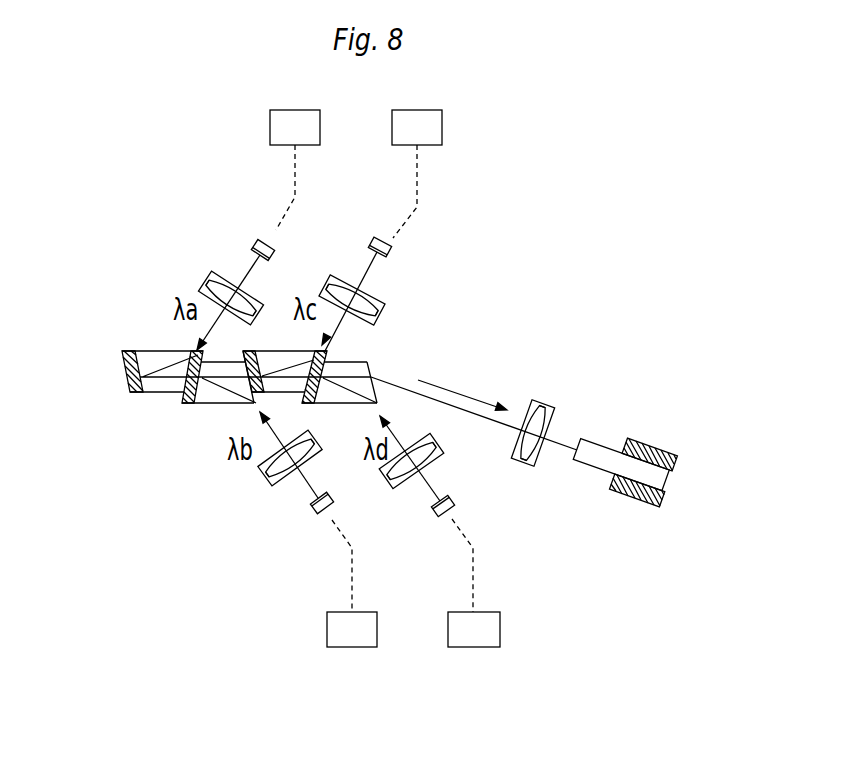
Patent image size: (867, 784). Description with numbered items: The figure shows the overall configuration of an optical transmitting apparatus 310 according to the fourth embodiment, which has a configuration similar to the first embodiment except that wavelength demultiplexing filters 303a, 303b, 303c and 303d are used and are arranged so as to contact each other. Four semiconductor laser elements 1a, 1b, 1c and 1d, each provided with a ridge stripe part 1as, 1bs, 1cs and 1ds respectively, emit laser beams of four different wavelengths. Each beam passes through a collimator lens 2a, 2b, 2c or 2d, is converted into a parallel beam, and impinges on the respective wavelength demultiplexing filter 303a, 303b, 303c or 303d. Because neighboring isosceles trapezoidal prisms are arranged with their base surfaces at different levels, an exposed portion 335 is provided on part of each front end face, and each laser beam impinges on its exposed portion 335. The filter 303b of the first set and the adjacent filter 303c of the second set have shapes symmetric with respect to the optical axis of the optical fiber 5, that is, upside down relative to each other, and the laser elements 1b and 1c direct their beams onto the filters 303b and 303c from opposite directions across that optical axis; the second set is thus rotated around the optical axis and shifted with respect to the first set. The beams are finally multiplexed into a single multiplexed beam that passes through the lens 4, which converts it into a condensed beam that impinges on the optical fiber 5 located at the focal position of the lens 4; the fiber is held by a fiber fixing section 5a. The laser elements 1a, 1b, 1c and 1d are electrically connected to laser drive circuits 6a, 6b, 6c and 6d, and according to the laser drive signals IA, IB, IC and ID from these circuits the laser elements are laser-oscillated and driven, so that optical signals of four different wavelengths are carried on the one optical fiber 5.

The optical transmitting apparatus 310 is at (142, 140).
The wavelength demultiplexing filter 303a is at (133, 351).
The wavelength demultiplexing filter 303b is at (197, 406).
The wavelength demultiplexing filter 303c is at (256, 351).
The wavelength demultiplexing filter 303d is at (368, 363).
The exposed portion 335 is at (261, 361).
The semiconductor laser element 1a is at (257, 241).
The ridge stripe part 1as is at (268, 238).
The lens 2a is at (213, 271).
The semiconductor laser element 1b is at (308, 505).
The ridge stripe part 1bs is at (321, 518).
The lens 2b is at (268, 477).
The semiconductor laser element 1c is at (371, 235).
The ridge stripe part 1cs is at (383, 233).
The lens 2c is at (333, 276).
The semiconductor laser element 1d is at (458, 495).
The ridge stripe part 1ds is at (449, 519).
The lens 2d is at (398, 474).
The lens 4 is at (552, 417).
The optical fiber 5 is at (598, 442).
The fiber fixing section 5a is at (650, 445).
The laser drive circuit 6a is at (320, 127).
The laser drive circuit 6b is at (377, 630).
The laser drive circuit 6c is at (442, 127).
The laser drive circuit 6d is at (500, 630).
The laser drive signal IA is at (288, 210).
The laser drive signal IB is at (344, 536).
The laser drive signal IC is at (410, 217).
The laser drive signal ID is at (468, 533).